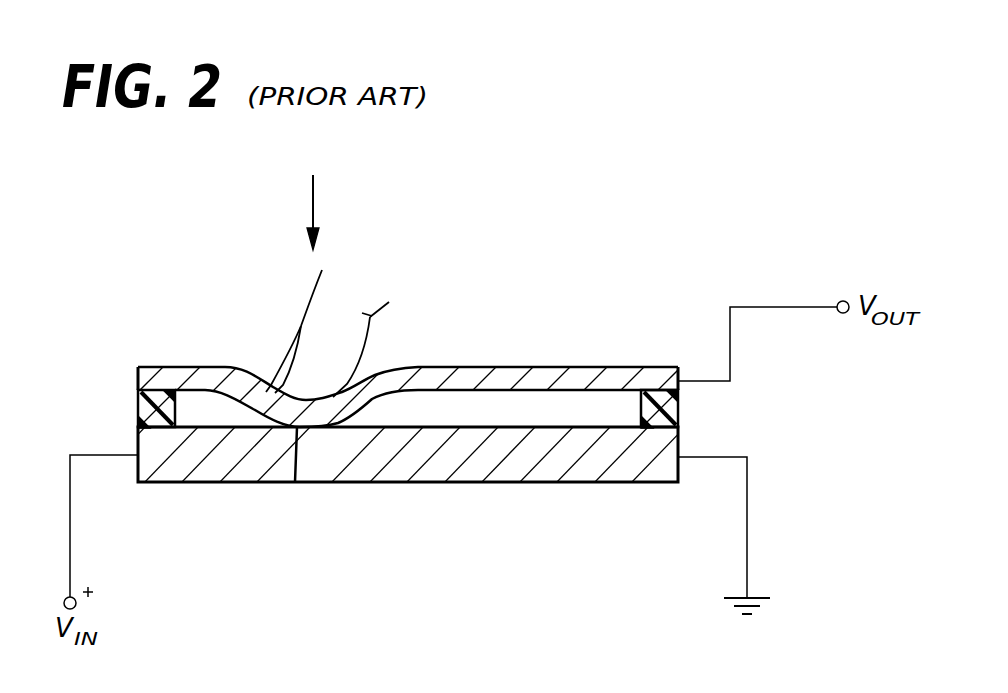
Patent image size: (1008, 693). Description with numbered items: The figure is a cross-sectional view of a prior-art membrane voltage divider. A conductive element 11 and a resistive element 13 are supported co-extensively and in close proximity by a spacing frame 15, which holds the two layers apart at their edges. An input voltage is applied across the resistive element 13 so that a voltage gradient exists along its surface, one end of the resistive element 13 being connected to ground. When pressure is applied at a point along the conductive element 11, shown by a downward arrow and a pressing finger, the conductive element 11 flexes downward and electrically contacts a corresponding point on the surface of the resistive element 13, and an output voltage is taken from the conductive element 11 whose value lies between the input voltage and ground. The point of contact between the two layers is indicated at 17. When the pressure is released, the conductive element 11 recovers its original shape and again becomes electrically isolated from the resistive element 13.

The conductive element 11 is at (465, 373).
The resistive element 13 is at (523, 468).
The spacing frame 15 is at (140, 410).
The contact/crack region between plates 17 is at (295, 482).